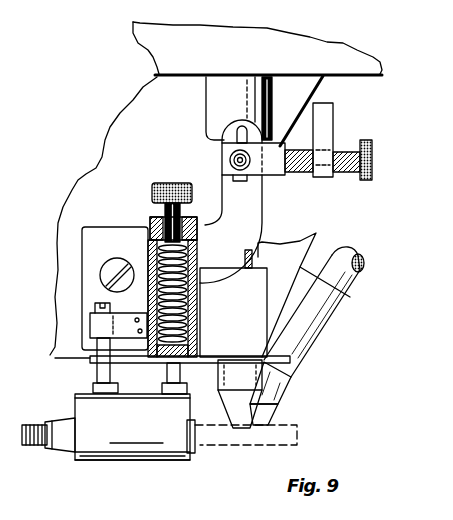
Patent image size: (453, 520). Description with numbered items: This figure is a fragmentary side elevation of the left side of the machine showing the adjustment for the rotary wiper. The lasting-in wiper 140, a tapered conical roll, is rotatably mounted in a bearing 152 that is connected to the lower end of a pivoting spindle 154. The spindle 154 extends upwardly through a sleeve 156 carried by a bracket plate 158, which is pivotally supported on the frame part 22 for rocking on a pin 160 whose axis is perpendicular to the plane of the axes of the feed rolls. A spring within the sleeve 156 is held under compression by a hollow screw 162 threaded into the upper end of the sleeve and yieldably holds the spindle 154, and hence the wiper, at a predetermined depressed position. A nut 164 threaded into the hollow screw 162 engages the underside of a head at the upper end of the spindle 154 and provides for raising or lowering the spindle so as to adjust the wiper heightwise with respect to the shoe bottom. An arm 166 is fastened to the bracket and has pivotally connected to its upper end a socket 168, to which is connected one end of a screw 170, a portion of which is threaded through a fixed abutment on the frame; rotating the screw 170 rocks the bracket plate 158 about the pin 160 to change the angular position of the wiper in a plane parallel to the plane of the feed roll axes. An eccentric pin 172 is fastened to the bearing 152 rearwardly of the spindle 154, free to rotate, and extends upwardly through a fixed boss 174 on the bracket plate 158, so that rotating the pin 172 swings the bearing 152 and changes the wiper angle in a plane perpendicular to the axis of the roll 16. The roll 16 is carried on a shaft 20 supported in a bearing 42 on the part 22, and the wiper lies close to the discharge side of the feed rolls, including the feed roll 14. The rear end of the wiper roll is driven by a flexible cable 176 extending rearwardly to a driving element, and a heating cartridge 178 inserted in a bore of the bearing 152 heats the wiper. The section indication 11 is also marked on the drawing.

The bearing 42 is at (216, 105).
The socket 168 is at (272, 143).
The arm 166 is at (255, 205).
The screw 170 is at (348, 170).
The nut 164 is at (160, 207).
The hollow screw 162 is at (158, 211).
The sleeve 156 is at (196, 231).
The pivoting spindle 154 is at (194, 262).
The bracket plate 158 is at (93, 232).
The pin 160 is at (100, 270).
The section line indicator / block 11 is at (31, 340).
The shaft 20 is at (258, 258).
The part 22 is at (255, 331).
The roll 16 is at (288, 398).
The feed roll 14 is at (283, 415).
The fixed boss 174 is at (83, 342).
The eccentric pin 172 is at (100, 378).
The heating cartridge 178 is at (70, 440).
The flexible cable 176 is at (30, 442).
The bearing 152 is at (137, 447).
The lasting-in wiper 140 is at (236, 442).